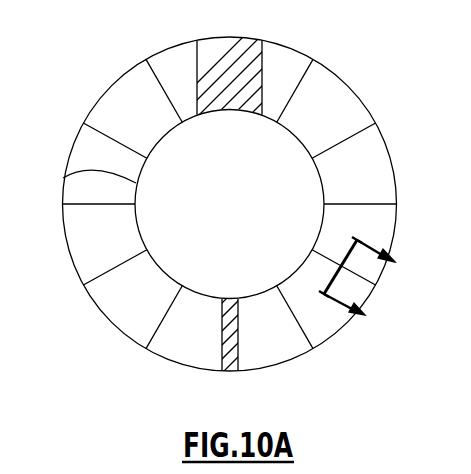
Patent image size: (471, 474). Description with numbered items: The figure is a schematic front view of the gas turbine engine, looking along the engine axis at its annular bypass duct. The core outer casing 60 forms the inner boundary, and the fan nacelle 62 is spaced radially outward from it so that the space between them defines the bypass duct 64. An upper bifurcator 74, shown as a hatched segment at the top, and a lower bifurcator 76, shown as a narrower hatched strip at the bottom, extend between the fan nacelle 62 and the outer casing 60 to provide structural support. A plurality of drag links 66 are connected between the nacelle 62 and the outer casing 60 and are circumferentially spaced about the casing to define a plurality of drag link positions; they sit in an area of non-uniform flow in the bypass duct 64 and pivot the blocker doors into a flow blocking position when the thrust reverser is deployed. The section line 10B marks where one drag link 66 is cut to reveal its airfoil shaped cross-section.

The core outer casing 60 is at (63, 178).
The fan nacelle 62 is at (372, 111).
The bypass duct 64 is at (133, 110).
The drag links 66 is at (340, 143).
The upper bifurcator 74 is at (220, 58).
The lower bifurcator 76 is at (229, 371).
The section line 10B is at (375, 282).